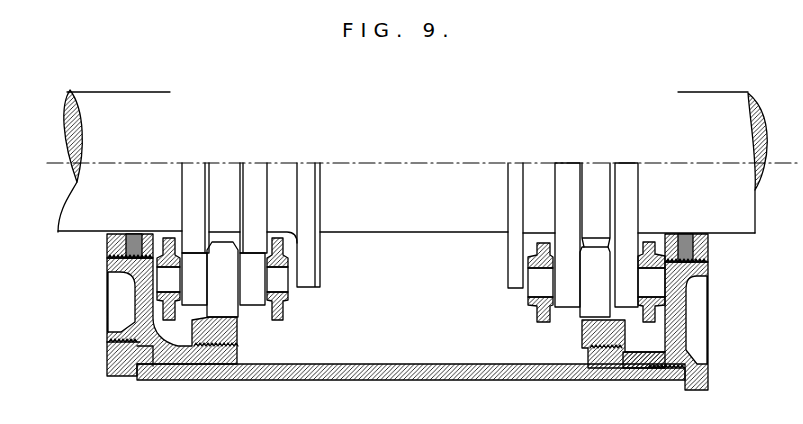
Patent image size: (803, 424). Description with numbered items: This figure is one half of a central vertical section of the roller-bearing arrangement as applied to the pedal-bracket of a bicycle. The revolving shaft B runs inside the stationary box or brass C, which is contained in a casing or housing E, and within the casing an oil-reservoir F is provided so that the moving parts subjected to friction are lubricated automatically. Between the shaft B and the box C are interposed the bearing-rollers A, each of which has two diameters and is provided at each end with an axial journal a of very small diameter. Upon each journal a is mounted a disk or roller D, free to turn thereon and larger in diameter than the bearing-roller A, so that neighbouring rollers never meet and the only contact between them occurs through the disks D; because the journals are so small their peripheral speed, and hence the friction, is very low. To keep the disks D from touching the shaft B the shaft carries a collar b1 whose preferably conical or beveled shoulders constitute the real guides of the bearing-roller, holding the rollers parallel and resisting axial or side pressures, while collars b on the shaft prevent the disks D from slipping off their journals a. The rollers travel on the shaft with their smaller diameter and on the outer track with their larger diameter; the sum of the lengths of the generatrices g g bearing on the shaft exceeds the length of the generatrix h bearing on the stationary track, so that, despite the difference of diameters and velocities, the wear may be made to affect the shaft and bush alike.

The shaft B is at (423, 166).
The collar of the shaft b1 is at (224, 208).
The collar on the shaft b is at (308, 225).
The generatrix g is at (223, 279).
The generatrix h is at (222, 279).
The axial journal a is at (540, 293).
The bearing-roller A is at (595, 282).
The disk or roller D is at (536, 325).
The box or brass C is at (581, 333).
The casing or housing E is at (447, 367).
The oil-reservoir F is at (407, 312).